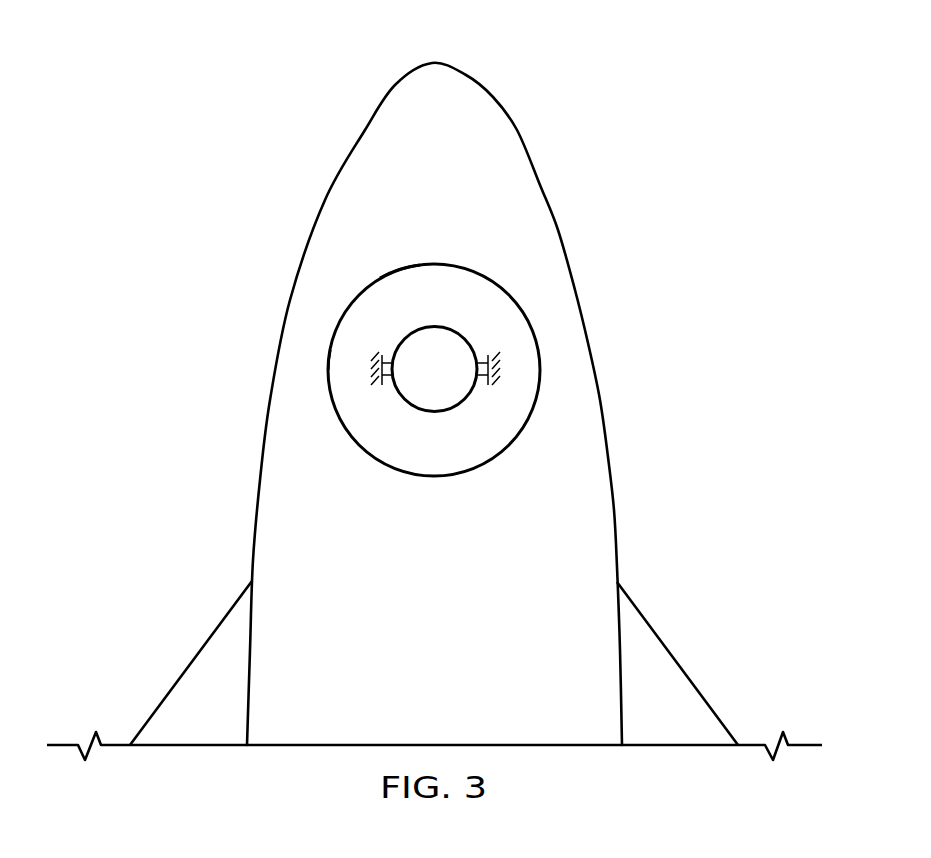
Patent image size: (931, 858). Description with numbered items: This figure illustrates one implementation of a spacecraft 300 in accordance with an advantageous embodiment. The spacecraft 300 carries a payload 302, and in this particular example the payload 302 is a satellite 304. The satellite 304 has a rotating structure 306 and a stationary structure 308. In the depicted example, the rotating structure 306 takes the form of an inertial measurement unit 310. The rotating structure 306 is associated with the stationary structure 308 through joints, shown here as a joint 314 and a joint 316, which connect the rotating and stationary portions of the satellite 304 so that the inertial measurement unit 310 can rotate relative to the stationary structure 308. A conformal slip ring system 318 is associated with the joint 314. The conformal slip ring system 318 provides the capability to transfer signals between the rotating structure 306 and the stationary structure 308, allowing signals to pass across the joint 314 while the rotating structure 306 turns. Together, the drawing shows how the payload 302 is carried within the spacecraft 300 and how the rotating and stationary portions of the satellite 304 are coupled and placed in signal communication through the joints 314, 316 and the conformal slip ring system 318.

The spacecraft 300 is at (491, 93).
The payload 302 is at (354, 299).
The satellite 304 is at (337, 373).
The rotating structure 306 is at (398, 263).
The stationary structure 308 is at (433, 327).
The inertial measurement unit 310 is at (418, 470).
The joint 314 is at (486, 355).
The joint 316 is at (384, 355).
The conformal slip ring system 318 is at (484, 386).